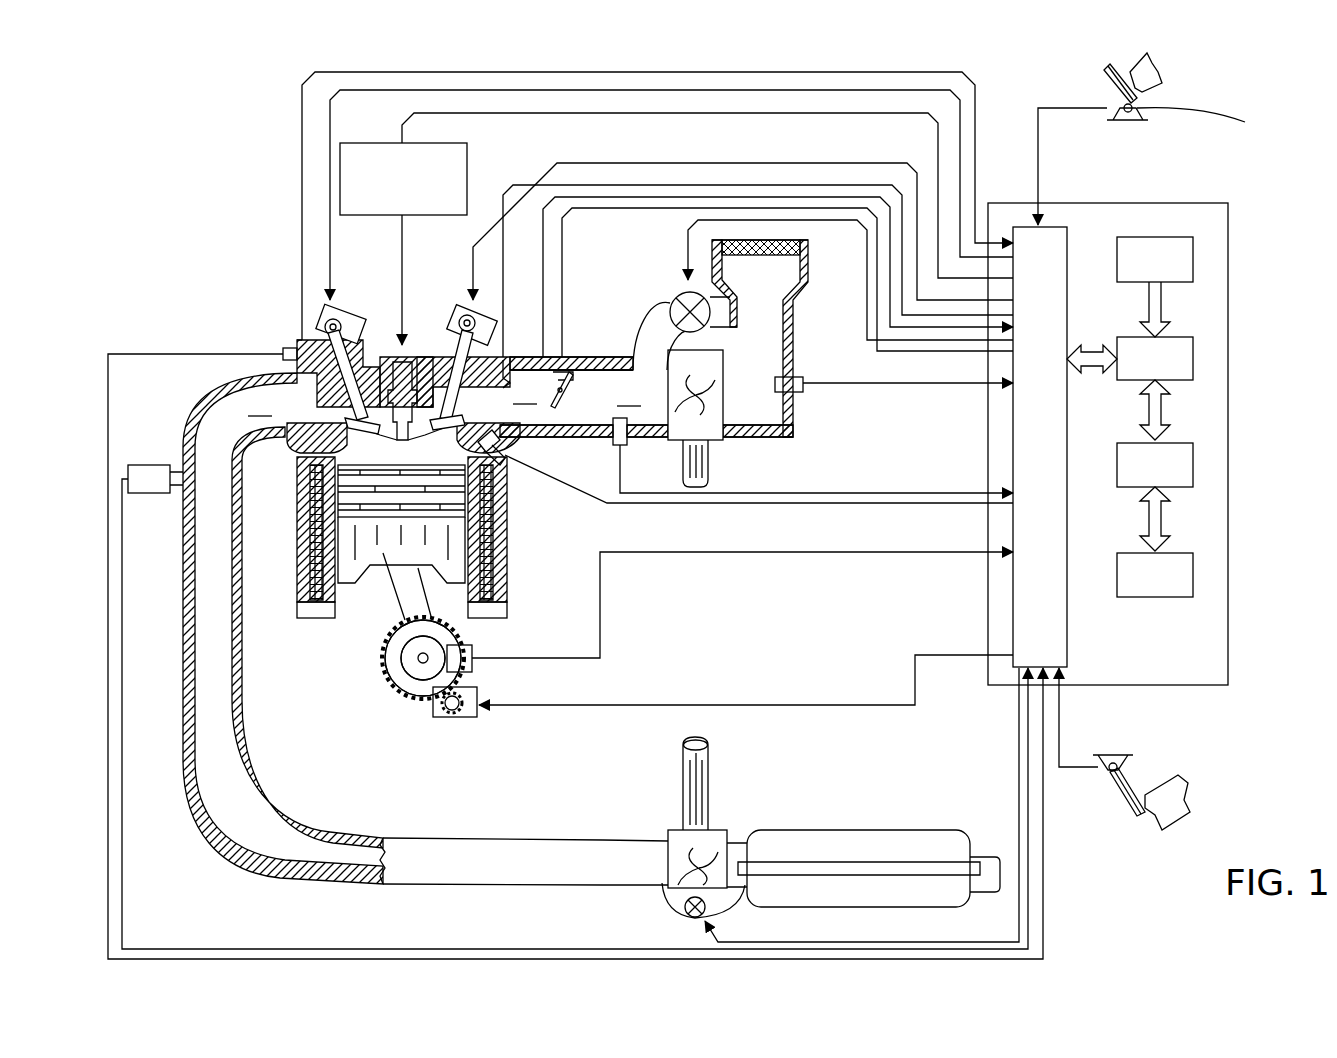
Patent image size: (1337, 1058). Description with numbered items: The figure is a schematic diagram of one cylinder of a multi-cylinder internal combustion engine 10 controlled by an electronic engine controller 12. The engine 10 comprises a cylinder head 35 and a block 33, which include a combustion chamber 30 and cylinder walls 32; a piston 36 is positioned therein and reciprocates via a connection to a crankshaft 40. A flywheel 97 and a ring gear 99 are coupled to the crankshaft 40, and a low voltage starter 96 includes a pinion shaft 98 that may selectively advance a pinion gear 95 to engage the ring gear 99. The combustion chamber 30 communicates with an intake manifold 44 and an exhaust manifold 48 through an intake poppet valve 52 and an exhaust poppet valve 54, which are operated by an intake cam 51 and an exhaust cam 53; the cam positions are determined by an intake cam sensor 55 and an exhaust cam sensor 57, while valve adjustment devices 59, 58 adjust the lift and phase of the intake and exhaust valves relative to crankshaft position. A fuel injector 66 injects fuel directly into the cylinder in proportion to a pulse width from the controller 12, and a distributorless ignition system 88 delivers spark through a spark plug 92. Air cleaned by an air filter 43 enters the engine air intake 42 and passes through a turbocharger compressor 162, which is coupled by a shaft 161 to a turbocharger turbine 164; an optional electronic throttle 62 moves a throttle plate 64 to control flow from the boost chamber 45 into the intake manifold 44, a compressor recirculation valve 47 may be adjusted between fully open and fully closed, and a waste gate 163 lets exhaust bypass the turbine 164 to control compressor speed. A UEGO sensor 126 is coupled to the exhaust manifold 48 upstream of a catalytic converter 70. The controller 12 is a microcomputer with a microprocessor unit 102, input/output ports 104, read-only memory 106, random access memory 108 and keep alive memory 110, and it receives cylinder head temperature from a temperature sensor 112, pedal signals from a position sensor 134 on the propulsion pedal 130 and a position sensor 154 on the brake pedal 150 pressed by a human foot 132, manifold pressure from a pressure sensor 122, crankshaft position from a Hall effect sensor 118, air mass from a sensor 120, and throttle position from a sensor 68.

The internal combustion engine 10 is at (228, 292).
The electronic engine controller 12 is at (1220, 205).
The combustion chamber 30 is at (430, 470).
The cylinder walls 32 is at (340, 605).
The block 33 is at (295, 493).
The cylinder head 35 is at (291, 337).
The piston 36 is at (390, 560).
The crankshaft 40 is at (412, 690).
The engine air intake 42 is at (627, 265).
The air filter 43 is at (768, 258).
The intake manifold 44 is at (646, 397).
The boost chamber 45 is at (576, 389).
The compressor recirculation valve 47 is at (675, 298).
The exhaust manifold 48 is at (425, 629).
The intake cam 51 is at (470, 300).
The intake poppet valve 52 is at (452, 422).
The exhaust cam 53 is at (338, 303).
The exhaust poppet valve 54 is at (350, 427).
The intake cam sensor 55 is at (478, 330).
The exhaust cam sensor 57 is at (322, 322).
The valve adjustment device 58 is at (342, 327).
The valve adjustment device 59 is at (488, 318).
The electronic throttle 62 is at (570, 395).
The throttle plate 64 is at (570, 405).
The fuel injector 66 is at (507, 452).
The throttle position sensor 68 is at (505, 375).
The catalytic converter 70 is at (790, 832).
The distributorless ignition system 88 is at (360, 143).
The spark plug 92 is at (398, 360).
The pinion gear 95 is at (456, 714).
The starter 96 is at (466, 720).
The flywheel 97 is at (398, 662).
The pinion shaft 98 is at (446, 712).
The ring gear 99 is at (420, 700).
The microprocessor unit 102 is at (1195, 357).
The input/output ports 104 is at (1067, 232).
The read-only memory 106 is at (1195, 258).
The random access memory 108 is at (1195, 467).
The keep alive memory 110 is at (1195, 577).
The temperature sensor 112 is at (283, 350).
The Hall effect sensor 118 is at (470, 648).
The air mass sensor 120 is at (800, 378).
The pressure sensor 122 is at (613, 442).
The Universal Exhaust Gas Oxygen sensor 126 is at (150, 465).
The propulsion pedal 130 is at (1105, 80).
The human foot 132 is at (1158, 70).
The position sensor 134 is at (1163, 164).
The brake pedal 150 is at (1132, 818).
The position sensor 154 is at (1100, 756).
The shaft 161 is at (683, 465).
The turbocharger compressor 162 is at (712, 428).
The waste gate 163 is at (686, 915).
The turbocharger turbine 164 is at (668, 832).